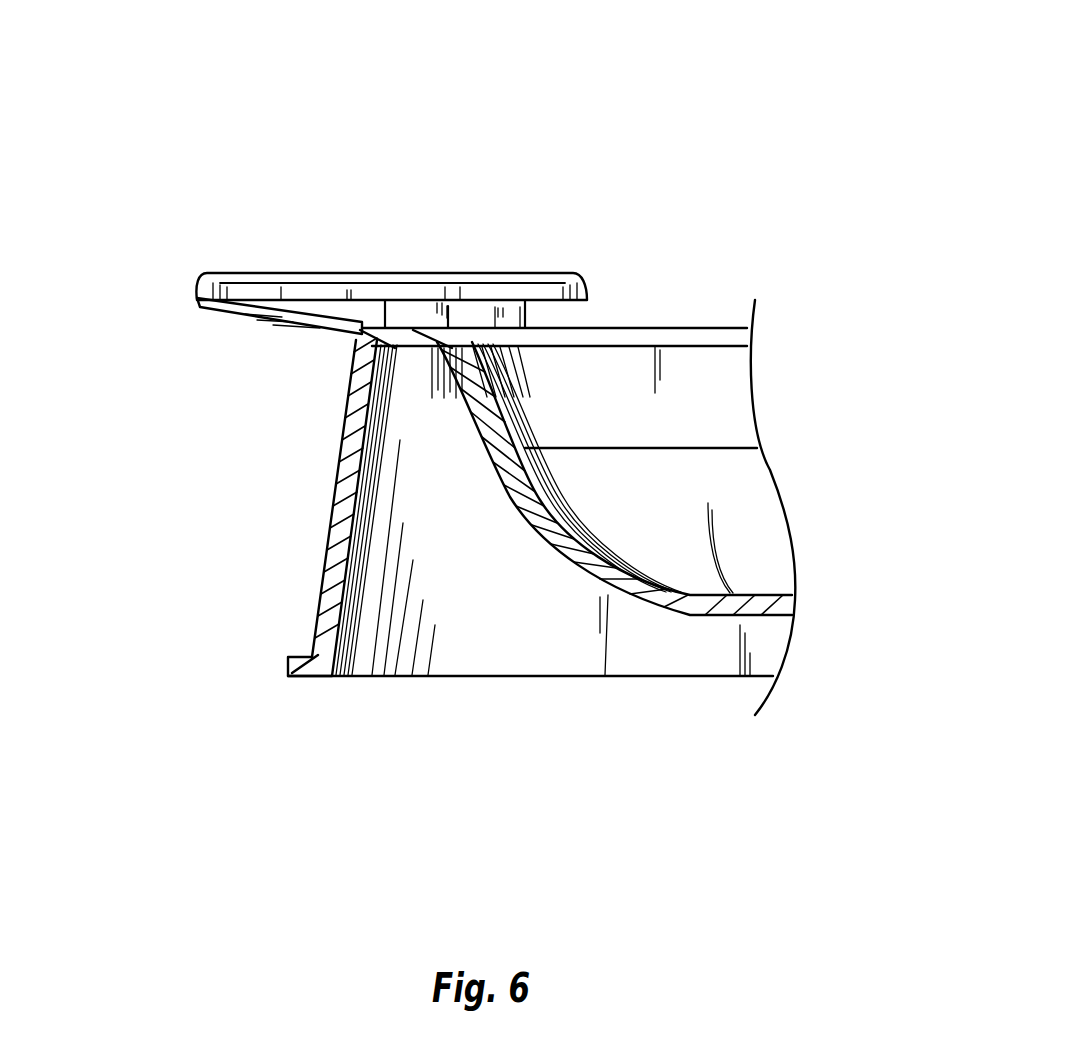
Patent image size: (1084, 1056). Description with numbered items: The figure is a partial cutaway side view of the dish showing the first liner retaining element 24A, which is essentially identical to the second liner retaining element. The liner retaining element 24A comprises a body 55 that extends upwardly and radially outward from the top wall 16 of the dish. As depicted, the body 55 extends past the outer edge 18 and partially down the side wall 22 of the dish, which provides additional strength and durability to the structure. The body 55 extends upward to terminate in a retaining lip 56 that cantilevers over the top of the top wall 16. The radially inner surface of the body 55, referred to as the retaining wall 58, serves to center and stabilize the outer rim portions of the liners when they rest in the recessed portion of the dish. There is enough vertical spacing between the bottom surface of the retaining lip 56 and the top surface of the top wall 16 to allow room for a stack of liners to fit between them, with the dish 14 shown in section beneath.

The first liner retaining element 24A is at (478, 92).
The retaining lip 56 is at (592, 296).
The retaining wall 58 is at (399, 313).
The body 55 is at (243, 313).
The outer edge 18 is at (340, 340).
The top wall 16 is at (699, 322).
The container body 14 is at (608, 556).
The side wall 22 is at (320, 604).